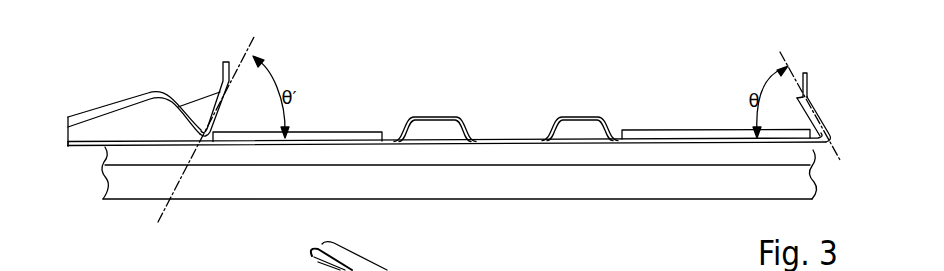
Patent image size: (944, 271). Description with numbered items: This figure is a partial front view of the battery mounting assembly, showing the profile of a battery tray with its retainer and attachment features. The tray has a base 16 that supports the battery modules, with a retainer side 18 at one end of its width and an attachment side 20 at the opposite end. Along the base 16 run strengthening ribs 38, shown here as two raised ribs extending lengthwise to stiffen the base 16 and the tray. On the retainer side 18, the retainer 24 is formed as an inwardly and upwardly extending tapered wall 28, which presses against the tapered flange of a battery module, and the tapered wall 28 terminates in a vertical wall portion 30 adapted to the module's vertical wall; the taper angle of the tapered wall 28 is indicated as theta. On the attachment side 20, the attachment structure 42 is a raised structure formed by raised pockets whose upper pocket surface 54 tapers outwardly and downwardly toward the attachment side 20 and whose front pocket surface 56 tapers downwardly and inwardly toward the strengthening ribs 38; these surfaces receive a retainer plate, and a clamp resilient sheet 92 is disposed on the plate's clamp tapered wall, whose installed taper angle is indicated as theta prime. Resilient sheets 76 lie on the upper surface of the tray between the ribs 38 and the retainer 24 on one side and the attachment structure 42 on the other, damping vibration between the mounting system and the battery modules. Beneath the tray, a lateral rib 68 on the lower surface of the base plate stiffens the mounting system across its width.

The base 16 is at (510, 140).
The retainer side 18 is at (823, 137).
The attachment side 20 is at (68, 147).
The retainer 24 is at (818, 110).
The tapered wall 28 is at (812, 98).
The vertical wall portion 30 is at (806, 78).
The strengthening rib 38 is at (433, 117).
The attachment structure 42 is at (68, 127).
The upper pocket surface 54 is at (133, 97).
The front pocket surface 56 is at (202, 133).
The lateral rib 68 is at (620, 166).
The resilient sheet 76 is at (331, 131).
The clamp resilient sheet 92 is at (227, 107).